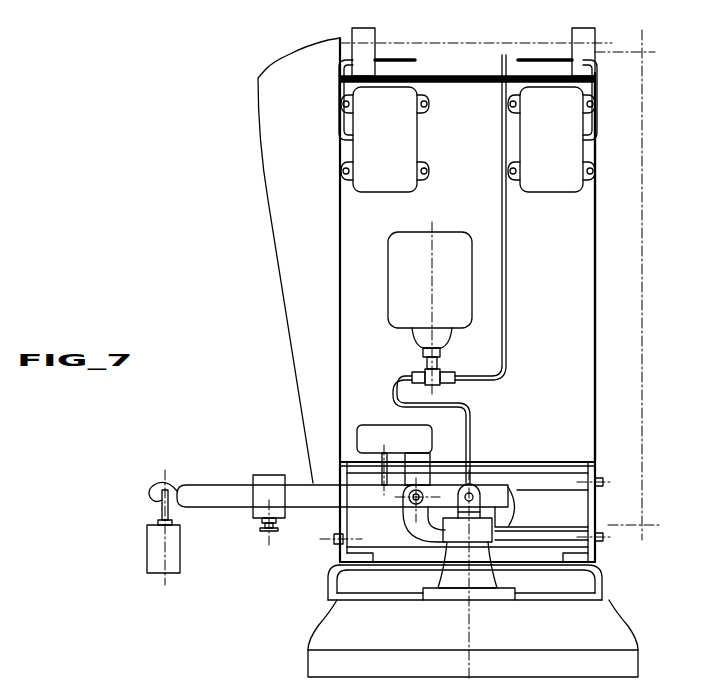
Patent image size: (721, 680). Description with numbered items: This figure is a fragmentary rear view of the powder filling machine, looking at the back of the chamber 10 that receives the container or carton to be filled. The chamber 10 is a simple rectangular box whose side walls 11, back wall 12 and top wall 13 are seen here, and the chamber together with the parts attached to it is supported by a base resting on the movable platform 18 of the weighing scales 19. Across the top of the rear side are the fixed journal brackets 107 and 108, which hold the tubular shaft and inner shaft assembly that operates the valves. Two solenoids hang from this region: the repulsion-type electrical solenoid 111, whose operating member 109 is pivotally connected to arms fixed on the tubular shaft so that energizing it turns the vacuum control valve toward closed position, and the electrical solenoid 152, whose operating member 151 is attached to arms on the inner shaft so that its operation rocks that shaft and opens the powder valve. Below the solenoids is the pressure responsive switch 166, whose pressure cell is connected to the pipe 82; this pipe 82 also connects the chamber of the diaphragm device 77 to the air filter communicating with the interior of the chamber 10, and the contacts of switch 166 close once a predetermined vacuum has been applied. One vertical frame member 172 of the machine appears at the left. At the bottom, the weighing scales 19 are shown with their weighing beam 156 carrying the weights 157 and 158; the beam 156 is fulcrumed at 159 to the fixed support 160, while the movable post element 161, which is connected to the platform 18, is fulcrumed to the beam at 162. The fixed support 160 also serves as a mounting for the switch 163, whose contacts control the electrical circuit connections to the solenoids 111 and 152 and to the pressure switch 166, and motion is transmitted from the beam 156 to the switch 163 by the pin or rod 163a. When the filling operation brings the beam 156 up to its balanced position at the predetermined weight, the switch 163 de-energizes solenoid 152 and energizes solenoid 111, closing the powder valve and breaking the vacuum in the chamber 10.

The chamber 10 is at (598, 300).
The side walls 11 is at (596, 506).
The back wall 12 is at (580, 343).
The top wall 13 is at (458, 74).
The movable platform 18 is at (600, 587).
The weighing scales 19 is at (625, 629).
The device 77 is at (513, 514).
The pipe 82 is at (507, 277).
The fixed journal bracket 107 is at (572, 35).
The fixed journal bracket 108 is at (375, 33).
The operating member 109 is at (597, 117).
The electrical solenoid 111 is at (574, 152).
The operating member 151 is at (340, 96).
The electrical solenoid 152 is at (358, 153).
The weighing beam 156 is at (199, 486).
The weight 157 is at (180, 543).
The weight 158 is at (254, 481).
The fulcrum 159 is at (410, 504).
The fixed support 160 is at (419, 526).
The movable post element 161 is at (483, 491).
The fulcrum 162 is at (471, 492).
The switch 163 is at (378, 425).
The pin or rod 163a is at (360, 454).
The pressure responsive switch 166 is at (401, 280).
The vertical frame member 172 is at (277, 237).